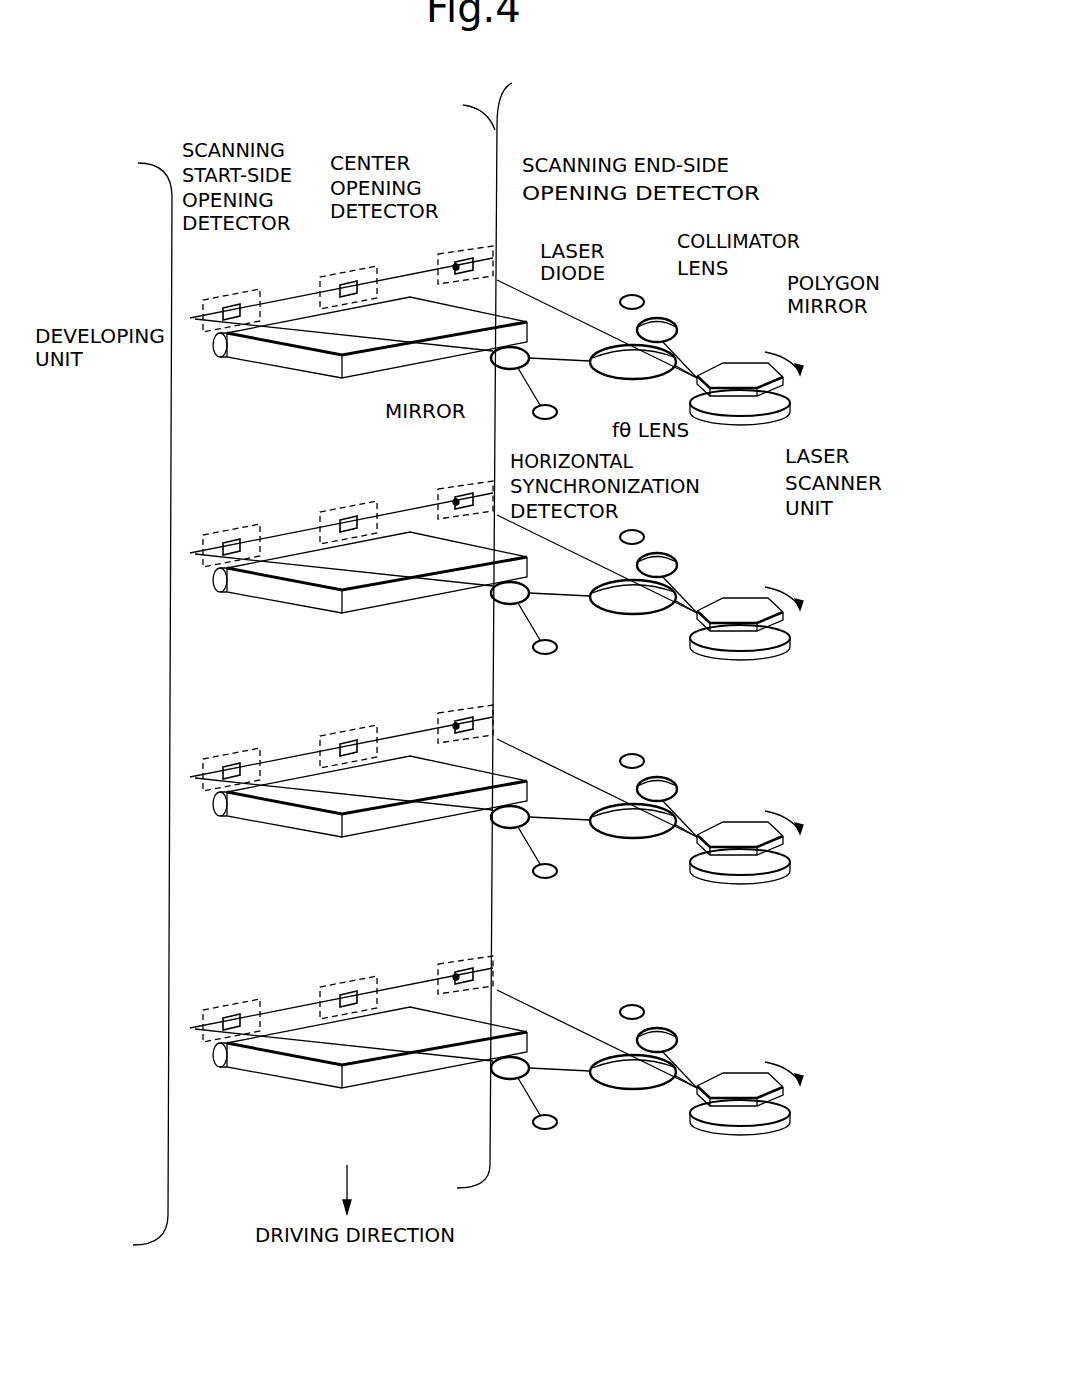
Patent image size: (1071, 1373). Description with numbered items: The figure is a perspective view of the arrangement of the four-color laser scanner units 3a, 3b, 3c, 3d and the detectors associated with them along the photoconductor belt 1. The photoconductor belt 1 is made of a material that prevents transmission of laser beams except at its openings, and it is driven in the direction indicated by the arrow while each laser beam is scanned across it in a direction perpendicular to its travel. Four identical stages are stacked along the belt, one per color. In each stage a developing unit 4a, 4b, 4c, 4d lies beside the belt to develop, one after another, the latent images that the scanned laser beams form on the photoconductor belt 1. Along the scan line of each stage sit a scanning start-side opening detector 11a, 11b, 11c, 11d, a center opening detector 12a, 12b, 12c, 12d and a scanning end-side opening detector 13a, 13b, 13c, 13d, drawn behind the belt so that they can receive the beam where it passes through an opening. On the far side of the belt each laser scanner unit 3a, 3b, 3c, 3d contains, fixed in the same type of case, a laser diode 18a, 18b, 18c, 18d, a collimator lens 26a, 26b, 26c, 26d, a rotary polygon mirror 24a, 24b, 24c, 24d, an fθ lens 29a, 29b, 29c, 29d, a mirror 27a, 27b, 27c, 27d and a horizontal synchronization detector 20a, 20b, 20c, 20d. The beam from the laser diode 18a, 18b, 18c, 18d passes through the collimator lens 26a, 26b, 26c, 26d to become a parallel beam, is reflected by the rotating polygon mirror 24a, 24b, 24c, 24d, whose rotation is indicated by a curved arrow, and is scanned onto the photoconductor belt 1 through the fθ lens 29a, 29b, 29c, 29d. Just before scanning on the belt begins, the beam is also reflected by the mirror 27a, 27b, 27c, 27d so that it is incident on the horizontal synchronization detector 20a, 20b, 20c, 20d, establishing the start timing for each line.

The photoconductor belt 1 is at (467, 657).
The laser scanner unit 3a is at (723, 418).
The laser scanner unit 3b is at (723, 653).
The laser scanner unit 3c is at (723, 877).
The laser scanner unit 3d is at (723, 1128).
The developing unit 4a is at (252, 355).
The developing unit 4b is at (252, 590).
The developing unit 4c is at (252, 814).
The developing unit 4d is at (252, 1065).
The scanning start-side opening detector 11a is at (223, 299).
The scanning start-side opening detector 11b is at (223, 534).
The scanning start-side opening detector 11c is at (223, 758).
The scanning start-side opening detector 11d is at (223, 1009).
The center opening detector 12a is at (346, 276).
The center opening detector 12b is at (346, 511).
The center opening detector 12c is at (346, 735).
The center opening detector 12d is at (346, 986).
The scanning end-side opening detector 13a is at (468, 253).
The scanning end-side opening detector 13b is at (455, 488).
The scanning end-side opening detector 13c is at (455, 712).
The scanning end-side opening detector 13d is at (455, 963).
The laser diode 18a is at (620, 303).
The laser diode 18b is at (644, 539).
The laser diode 18c is at (644, 763).
The laser diode 18d is at (644, 1014).
The horizontal synchronization detector 20a is at (537, 419).
The horizontal synchronization detector 20b is at (538, 655).
The horizontal synchronization detector 20c is at (538, 879).
The horizontal synchronization detector 20d is at (538, 1130).
The polygon mirror 24a is at (745, 360).
The polygon mirror 24b is at (748, 598).
The polygon mirror 24c is at (748, 822).
The polygon mirror 24d is at (748, 1073).
The collimator lens 26a is at (665, 320).
The collimator lens 26b is at (678, 566).
The collimator lens 26c is at (678, 790).
The collimator lens 26d is at (678, 1041).
The mirror 27a is at (491, 357).
The mirror 27b is at (491, 592).
The mirror 27c is at (491, 816).
The mirror 27d is at (491, 1067).
The fθ lens 29a is at (633, 380).
The fθ lens 29b is at (633, 615).
The fθ lens 29c is at (633, 839).
The fθ lens 29d is at (633, 1090).